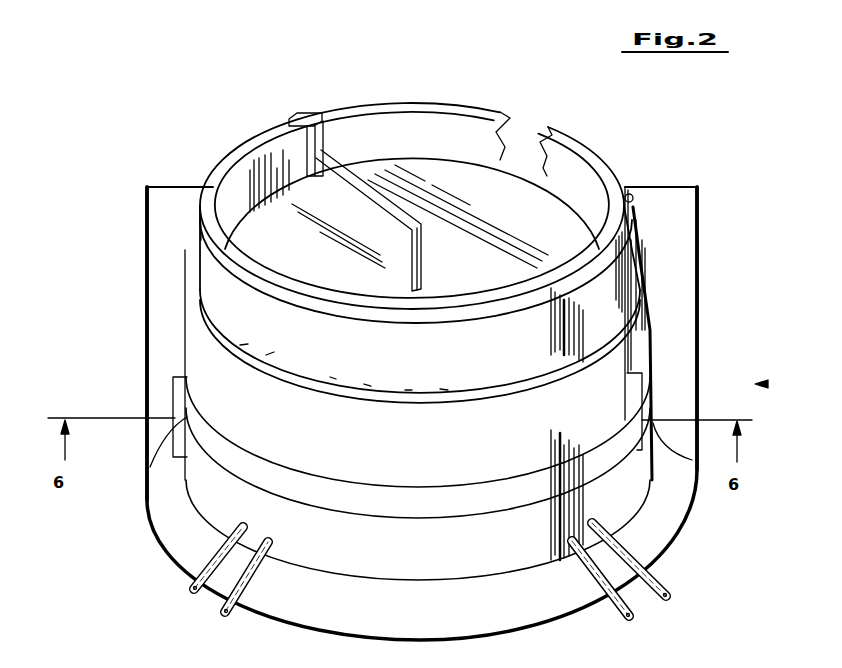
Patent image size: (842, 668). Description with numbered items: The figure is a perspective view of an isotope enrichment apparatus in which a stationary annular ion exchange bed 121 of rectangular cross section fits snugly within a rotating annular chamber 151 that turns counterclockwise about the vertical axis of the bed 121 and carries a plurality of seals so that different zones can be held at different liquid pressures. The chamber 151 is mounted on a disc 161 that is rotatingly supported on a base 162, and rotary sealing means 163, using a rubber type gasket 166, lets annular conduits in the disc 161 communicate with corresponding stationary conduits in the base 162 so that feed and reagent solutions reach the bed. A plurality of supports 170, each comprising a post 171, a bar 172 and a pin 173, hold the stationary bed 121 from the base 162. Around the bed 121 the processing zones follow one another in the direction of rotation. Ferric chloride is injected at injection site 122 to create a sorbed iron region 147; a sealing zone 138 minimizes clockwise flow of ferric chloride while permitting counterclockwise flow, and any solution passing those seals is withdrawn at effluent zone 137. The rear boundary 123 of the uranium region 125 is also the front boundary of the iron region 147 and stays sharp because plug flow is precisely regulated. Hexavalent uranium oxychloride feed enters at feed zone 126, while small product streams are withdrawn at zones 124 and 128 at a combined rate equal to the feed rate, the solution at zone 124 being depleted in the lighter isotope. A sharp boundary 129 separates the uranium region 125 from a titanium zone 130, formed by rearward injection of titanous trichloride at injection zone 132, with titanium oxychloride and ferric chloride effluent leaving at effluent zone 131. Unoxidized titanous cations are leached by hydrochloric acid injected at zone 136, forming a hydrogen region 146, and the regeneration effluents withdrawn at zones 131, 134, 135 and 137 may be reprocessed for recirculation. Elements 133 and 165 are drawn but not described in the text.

The annular-shaped ion exchange bed 121 is at (505, 147).
The ferric chloride injection site 122 is at (645, 266).
The rear boundary of uranium region 123 is at (632, 248).
The product withdrawal zone 124 is at (632, 230).
The uranium region 125 is at (632, 205).
The uranium feed zone 126 is at (330, 145).
The product withdrawal zone 128 is at (213, 302).
The boundary between uranium region and titanous region 129 is at (215, 312).
The titanium zone 130 is at (316, 280).
The effluent zone 131 is at (258, 354).
The titanous trichloride injection zone 132 is at (262, 357).
The slot 133 is at (334, 380).
The effluent zone 134 is at (370, 387).
The effluent zone 135 is at (412, 389).
The hydrochloric acid injection zone 136 is at (440, 388).
The effluent zone 137 is at (645, 324).
The sealing zone 138 is at (643, 300).
The hydrogen region 146 is at (558, 367).
The sorbed iron region 147 is at (653, 252).
The chamber 151 is at (333, 294).
The disc 161 is at (640, 361).
The base 162 is at (667, 521).
The rotary sealing means 163 is at (841, 386).
The retaining clip 165 is at (638, 470).
The rubber type gasket 166 is at (418, 447).
The support 170 is at (70, 381).
The post 171 is at (144, 394).
The bar 172 is at (187, 170).
The pin 173 is at (210, 197).